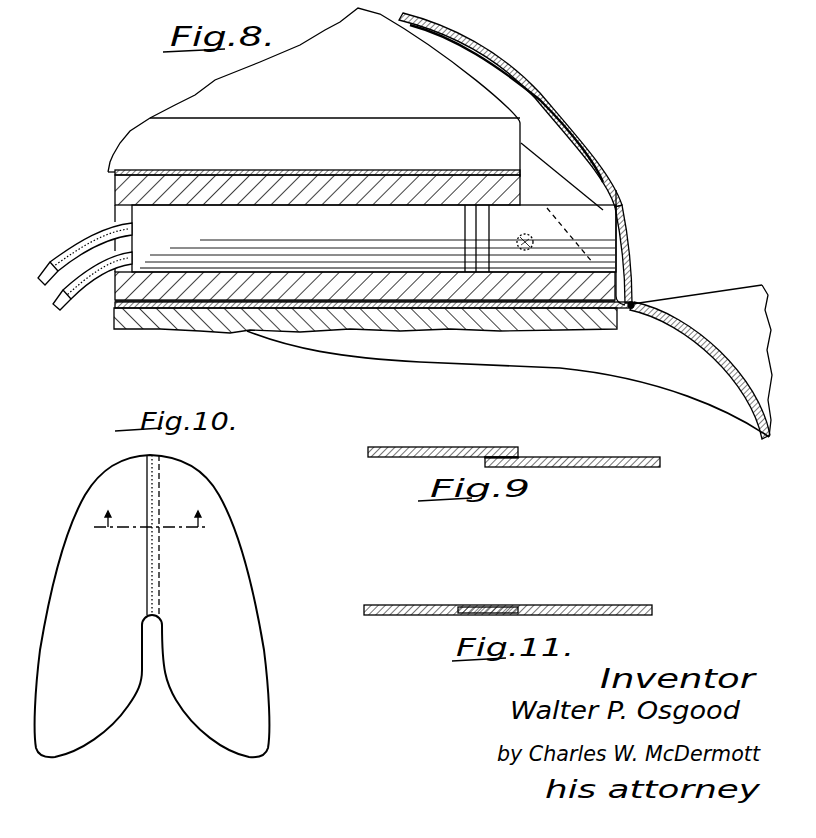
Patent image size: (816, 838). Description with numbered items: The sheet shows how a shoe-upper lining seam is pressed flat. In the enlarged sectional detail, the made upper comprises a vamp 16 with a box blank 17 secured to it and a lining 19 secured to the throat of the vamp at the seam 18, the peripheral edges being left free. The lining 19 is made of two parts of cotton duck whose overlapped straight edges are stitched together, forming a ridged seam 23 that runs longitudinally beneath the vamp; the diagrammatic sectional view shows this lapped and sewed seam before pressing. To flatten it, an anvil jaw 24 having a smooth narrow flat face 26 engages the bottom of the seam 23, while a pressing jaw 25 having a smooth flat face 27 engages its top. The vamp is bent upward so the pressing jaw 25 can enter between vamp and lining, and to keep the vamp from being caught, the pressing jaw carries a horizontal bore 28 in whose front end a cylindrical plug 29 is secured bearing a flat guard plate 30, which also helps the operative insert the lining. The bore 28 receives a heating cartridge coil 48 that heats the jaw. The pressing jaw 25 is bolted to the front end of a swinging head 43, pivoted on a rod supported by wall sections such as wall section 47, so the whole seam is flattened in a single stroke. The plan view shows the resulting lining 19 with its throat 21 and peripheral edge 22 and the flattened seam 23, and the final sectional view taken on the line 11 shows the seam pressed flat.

In FIG. 10, the section line 11— 11 is at (116, 508).
In FIG. 8, the vamp 16 is at (581, 133).
In FIG. 8, the box blank 17 is at (525, 78).
In FIG. 8, the seam 18 is at (635, 305).
In FIG. 8, the lining 19 is at (410, 308).
In FIG. 9, the lining 19 is at (555, 458).
In FIG. 11, the lining 19 is at (540, 607).
In FIG. 10, the lining 19 is at (220, 558).
In FIG. 8, the throat 21 is at (708, 347).
In FIG. 10, the throat 21 is at (165, 702).
In FIG. 10, the peripheral edge 22 is at (265, 632).
In FIG. 9, the ridged seam 23 is at (510, 460).
In FIG. 11, the ridged seam 23 is at (508, 607).
In FIG. 10, the ridged seam 23 is at (148, 475).
In FIG. 8, the anvil jaw 24 is at (585, 318).
In FIG. 8, the pressing jaw 25 is at (427, 185).
In FIG. 8, the flat face 26 is at (188, 303).
In FIG. 8, the flat face 27 is at (198, 304).
In FIG. 8, the horizontal bore 28 is at (118, 208).
In FIG. 8, the cylindrical plug 29 is at (593, 215).
In FIG. 8, the flat guard plate 30 is at (632, 222).
In FIG. 8, the swinging head 43 is at (314, 92).
In FIG. 8, the wall section 47 is at (300, 170).
In FIG. 8, the heating cartridge coil 48 is at (365, 238).